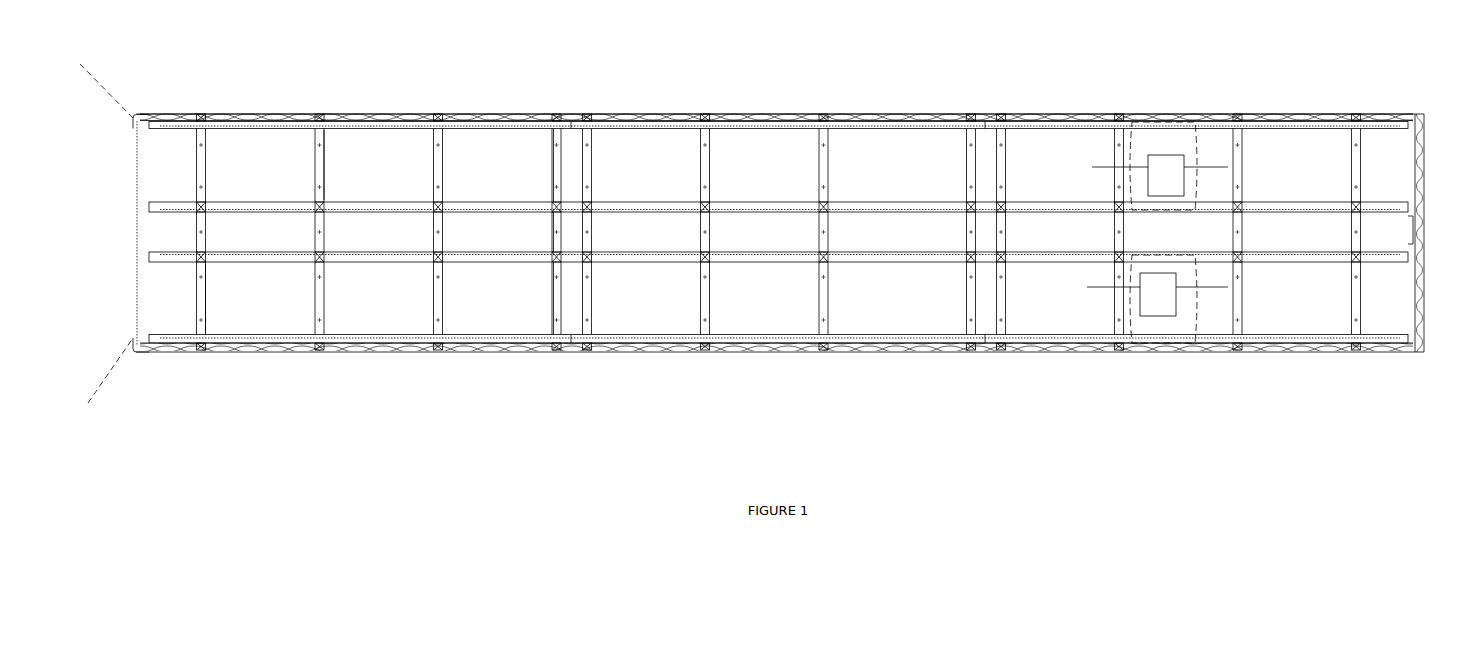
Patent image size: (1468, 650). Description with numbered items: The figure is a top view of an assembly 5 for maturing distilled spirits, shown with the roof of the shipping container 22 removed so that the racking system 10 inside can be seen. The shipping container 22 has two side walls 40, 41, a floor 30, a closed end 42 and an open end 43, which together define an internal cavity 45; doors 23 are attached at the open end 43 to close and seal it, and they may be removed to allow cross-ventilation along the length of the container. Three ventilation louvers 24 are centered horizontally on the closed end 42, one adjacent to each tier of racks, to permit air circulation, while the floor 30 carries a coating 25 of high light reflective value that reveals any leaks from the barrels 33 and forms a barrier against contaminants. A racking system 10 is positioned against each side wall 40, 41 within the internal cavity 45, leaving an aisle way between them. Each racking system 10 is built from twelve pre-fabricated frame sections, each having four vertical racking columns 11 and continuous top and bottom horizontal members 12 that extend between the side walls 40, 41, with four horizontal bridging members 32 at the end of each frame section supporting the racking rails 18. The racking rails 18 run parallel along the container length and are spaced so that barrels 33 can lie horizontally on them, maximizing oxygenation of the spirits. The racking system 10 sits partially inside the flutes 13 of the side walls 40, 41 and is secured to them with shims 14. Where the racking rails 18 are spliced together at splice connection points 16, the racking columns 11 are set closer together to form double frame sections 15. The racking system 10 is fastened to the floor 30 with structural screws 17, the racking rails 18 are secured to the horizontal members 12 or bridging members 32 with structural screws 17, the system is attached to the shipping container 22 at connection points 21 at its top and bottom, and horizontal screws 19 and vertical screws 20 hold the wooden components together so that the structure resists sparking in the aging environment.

The assembly for maturing distilled spirits 5 is at (820, 118).
The racking system 10 is at (320, 130).
The racking column 11 is at (705, 348).
The horizontal member 12 is at (705, 320).
The flute 13 is at (553, 125).
The shim 14 is at (555, 348).
The double frame section 15 is at (1001, 145).
The splice connection point 16 is at (985, 258).
The structural screw 17 is at (590, 320).
The racking rail 18 is at (475, 334).
The horizontal screw 19 is at (705, 210).
The vertical screw 20 is at (705, 215).
The connection point 21 is at (827, 340).
The shipping container 22 is at (680, 115).
The door 23 is at (155, 378).
The ventilation louver 24 is at (1412, 225).
The coating 25 is at (420, 150).
The floor 30 is at (305, 270).
The horizontal bridging member 32 is at (827, 300).
The barrel 33 is at (1165, 316).
The side wall 40 is at (877, 350).
The side wall 41 is at (853, 115).
The closed end 42 is at (1423, 195).
The open end 43 is at (136, 272).
The internal cavity 45 is at (1085, 150).